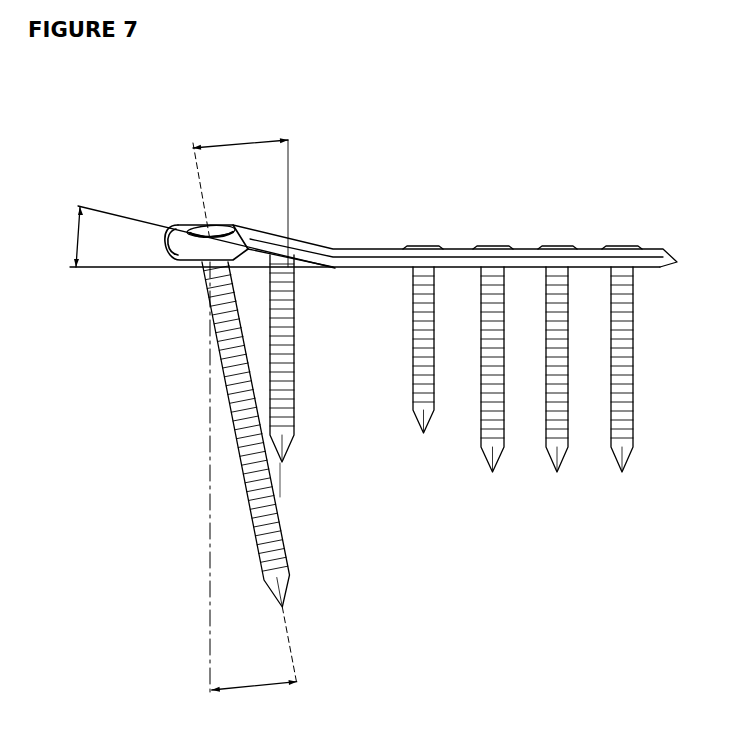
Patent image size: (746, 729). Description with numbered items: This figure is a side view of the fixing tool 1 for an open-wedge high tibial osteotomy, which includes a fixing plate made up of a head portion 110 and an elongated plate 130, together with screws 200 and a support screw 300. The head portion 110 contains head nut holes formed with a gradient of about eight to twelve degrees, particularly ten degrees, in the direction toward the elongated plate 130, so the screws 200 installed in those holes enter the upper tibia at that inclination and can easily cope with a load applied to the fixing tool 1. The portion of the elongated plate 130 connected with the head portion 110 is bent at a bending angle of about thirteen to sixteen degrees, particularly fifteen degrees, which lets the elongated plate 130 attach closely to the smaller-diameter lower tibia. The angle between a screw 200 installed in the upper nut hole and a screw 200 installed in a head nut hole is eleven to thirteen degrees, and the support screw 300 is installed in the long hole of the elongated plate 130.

The fixing tool for an open-wedge high tibial osteotomy 1 is at (99, 99).
The head portion 110 is at (187, 226).
The elongated plate 130 is at (587, 252).
The screws 200 is at (295, 415).
The support screw 300 is at (423, 434).